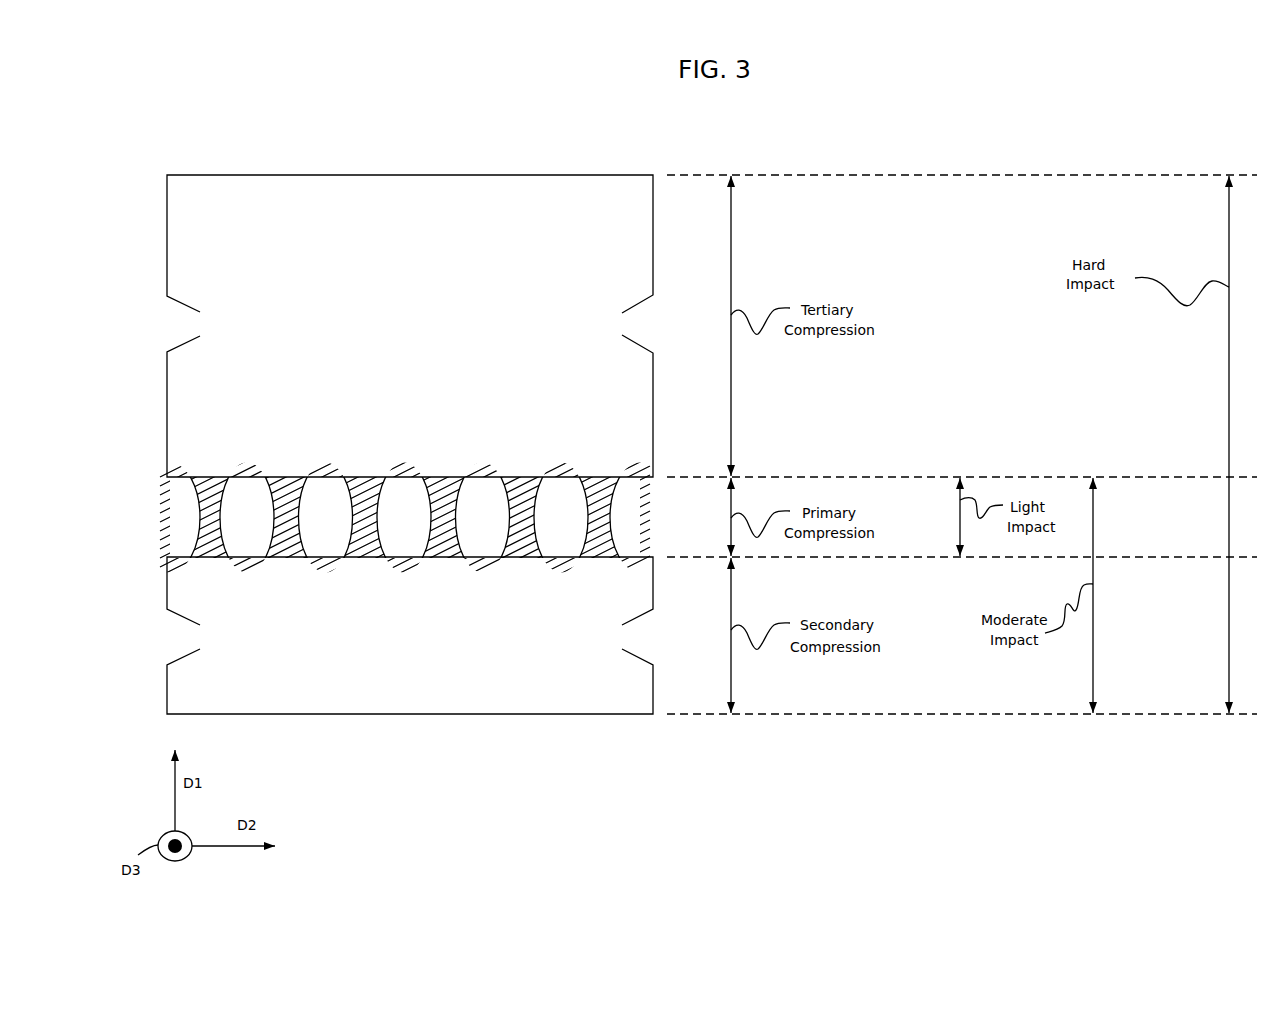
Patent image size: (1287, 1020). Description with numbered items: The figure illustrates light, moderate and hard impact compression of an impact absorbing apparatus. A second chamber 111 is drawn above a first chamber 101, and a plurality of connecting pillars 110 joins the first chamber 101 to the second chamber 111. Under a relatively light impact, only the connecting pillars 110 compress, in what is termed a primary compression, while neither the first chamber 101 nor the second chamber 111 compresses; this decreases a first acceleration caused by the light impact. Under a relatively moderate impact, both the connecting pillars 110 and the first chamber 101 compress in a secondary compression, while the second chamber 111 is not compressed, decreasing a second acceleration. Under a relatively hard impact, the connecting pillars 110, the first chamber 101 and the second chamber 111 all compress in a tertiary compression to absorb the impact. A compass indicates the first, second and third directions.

The second chamber 111 is at (272, 235).
The first chamber 101 is at (263, 676).
The connecting pillars 110 is at (197, 530).